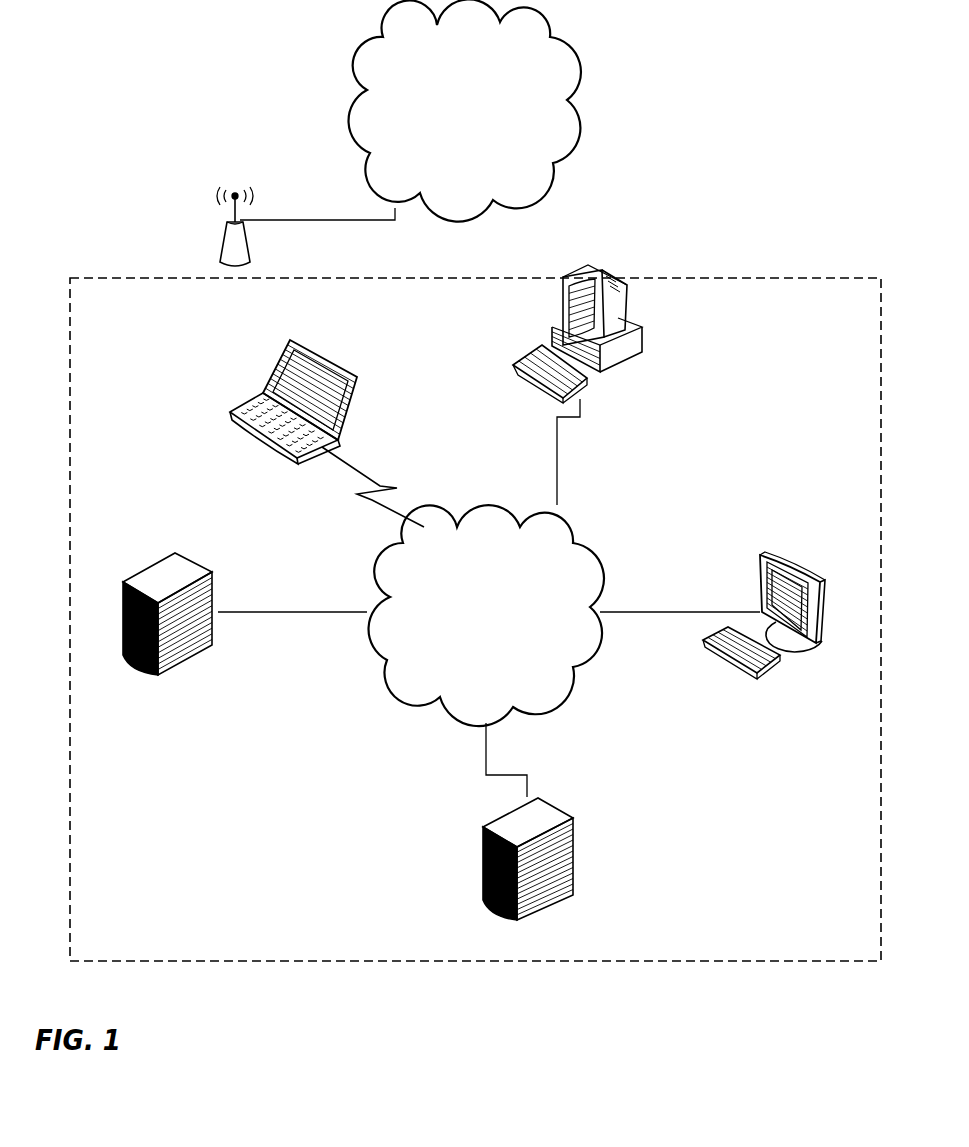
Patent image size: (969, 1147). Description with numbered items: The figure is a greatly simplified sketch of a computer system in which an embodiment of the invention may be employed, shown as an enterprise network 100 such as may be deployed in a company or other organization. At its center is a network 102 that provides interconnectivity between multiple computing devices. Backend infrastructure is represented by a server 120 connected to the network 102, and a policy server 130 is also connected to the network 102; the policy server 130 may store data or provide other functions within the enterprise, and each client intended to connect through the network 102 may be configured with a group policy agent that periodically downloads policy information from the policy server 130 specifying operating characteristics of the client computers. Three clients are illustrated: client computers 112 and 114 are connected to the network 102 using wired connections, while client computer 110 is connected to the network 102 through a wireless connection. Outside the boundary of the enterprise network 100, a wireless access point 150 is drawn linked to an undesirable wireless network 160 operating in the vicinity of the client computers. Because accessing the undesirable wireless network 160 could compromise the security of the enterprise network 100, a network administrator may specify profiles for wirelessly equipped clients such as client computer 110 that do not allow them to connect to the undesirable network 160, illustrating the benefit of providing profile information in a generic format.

The enterprise network 100 is at (630, 963).
The network 102 is at (486, 615).
The client computer 110 is at (262, 390).
The client computer 112 is at (640, 364).
The client computer 114 is at (768, 552).
The server 120 is at (562, 817).
The policy server 130 is at (196, 656).
The wireless access point 150 is at (232, 183).
The undesirable wireless network 160 is at (465, 111).